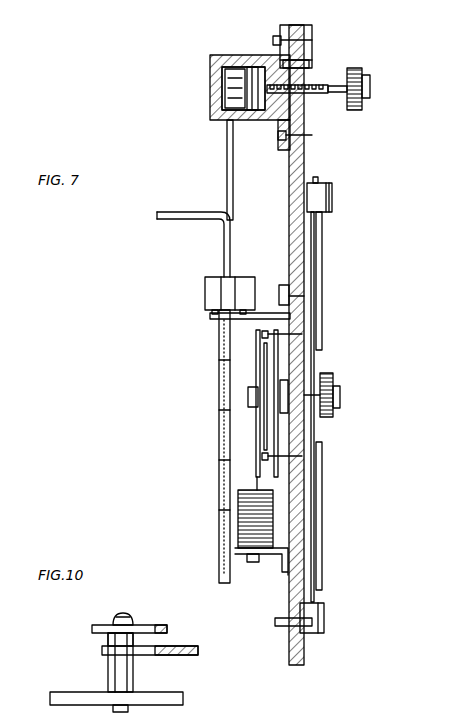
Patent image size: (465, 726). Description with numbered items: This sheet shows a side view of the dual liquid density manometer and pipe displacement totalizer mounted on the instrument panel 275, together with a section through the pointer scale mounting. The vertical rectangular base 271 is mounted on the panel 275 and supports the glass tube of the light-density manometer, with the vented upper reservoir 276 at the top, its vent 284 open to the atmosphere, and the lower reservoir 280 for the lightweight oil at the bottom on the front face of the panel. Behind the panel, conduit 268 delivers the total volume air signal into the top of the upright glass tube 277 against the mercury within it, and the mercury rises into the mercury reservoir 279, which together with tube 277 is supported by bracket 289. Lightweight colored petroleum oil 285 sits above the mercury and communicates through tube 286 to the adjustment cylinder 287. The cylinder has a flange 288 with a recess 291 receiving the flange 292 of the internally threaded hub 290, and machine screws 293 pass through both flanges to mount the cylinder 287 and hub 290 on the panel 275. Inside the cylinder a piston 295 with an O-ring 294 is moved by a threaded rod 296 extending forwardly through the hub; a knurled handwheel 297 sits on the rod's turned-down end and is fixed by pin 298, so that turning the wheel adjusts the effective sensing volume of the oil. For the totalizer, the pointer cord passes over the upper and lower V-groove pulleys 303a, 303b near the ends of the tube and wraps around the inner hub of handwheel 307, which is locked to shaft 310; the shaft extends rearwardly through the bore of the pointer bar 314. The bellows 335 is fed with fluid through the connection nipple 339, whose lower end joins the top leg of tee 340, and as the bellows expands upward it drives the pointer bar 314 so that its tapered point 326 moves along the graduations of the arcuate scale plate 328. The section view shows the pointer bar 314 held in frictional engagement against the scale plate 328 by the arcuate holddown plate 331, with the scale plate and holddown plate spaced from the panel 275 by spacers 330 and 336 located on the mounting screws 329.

In FIG. 7, the conduit 268 is at (185, 222).
In FIG. 7, the rectangular base 271 is at (314, 495).
In FIG. 7, the instrument panel 275 is at (305, 167).
In FIG. 10, the instrument panel 275 is at (180, 692).
In FIG. 7, the reservoir 276 is at (332, 205).
In FIG. 7, the glass tube 277 is at (219, 410).
In FIG. 7, the mercury reservoir 279 is at (205, 292).
In FIG. 7, the lower reservoir 280 is at (324, 617).
In FIG. 7, the vent 284 is at (332, 190).
In FIG. 7, the petroleum oil 285 is at (240, 90).
In FIG. 7, the tube 286 is at (227, 170).
In FIG. 7, the cylinder 287 is at (213, 106).
In FIG. 7, the flange 288 is at (290, 152).
In FIG. 7, the bracket 289 is at (210, 318).
In FIG. 7, the internally threaded hub 290 is at (304, 62).
In FIG. 7, the recess 291 is at (312, 52).
In FIG. 7, the flange 292 is at (318, 66).
In FIG. 7, the machine screws 293 is at (283, 137).
In FIG. 7, the O-ring 294 is at (250, 66).
In FIG. 7, the piston 295 is at (228, 71).
In FIG. 7, the threaded rod 296 is at (330, 95).
In FIG. 7, the knurled handwheel 297 is at (362, 73).
In FIG. 7, the pin 298 is at (368, 97).
In FIG. 7, the upper V-groove pulley 303a is at (322, 228).
In FIG. 7, the lower V-groove pulley 303b is at (322, 585).
In FIG. 7, the handwheel 307 is at (330, 375).
In FIG. 7, the shaft 310 is at (340, 397).
In FIG. 10, the pointer bar 314 is at (48, 640).
In FIG. 10, the point 326 is at (183, 645).
In FIG. 10, the arcuate scale plate 328 is at (198, 650).
In FIG. 10, the mounting screws 329 is at (125, 614).
In FIG. 10, the spacer 330 is at (108, 650).
In FIG. 10, the arcuate holddown plate 331 is at (160, 625).
In FIG. 7, the bellows 335 is at (245, 515).
In FIG. 10, the spacer 336 is at (134, 670).
In FIG. 7, the connection nipple 339 is at (278, 562).
In FIG. 7, the tee 340 is at (250, 562).